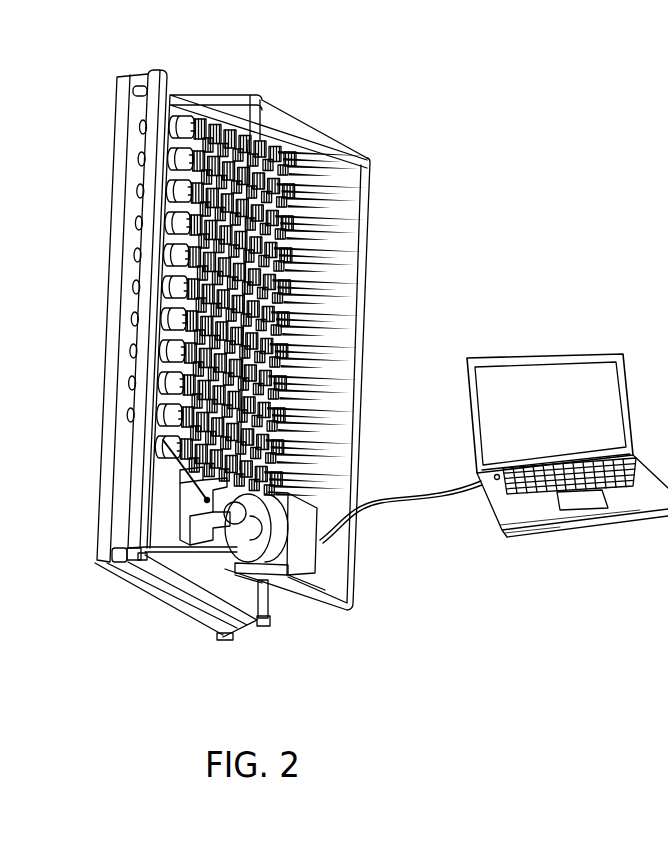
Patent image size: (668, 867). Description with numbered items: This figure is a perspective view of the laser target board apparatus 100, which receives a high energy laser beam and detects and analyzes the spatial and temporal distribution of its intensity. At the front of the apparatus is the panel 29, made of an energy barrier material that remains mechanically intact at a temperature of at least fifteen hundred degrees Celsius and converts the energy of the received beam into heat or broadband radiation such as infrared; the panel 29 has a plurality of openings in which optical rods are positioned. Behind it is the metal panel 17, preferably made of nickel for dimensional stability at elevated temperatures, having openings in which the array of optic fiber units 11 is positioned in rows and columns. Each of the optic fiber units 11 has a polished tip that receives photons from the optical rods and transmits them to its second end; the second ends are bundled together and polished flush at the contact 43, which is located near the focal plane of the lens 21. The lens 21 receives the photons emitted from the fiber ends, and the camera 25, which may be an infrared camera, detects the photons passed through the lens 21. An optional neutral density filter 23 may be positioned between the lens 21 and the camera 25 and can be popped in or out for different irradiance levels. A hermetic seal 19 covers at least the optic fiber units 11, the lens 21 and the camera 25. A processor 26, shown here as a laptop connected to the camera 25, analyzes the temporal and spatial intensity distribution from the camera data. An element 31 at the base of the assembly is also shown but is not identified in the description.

The laser target board apparatus 100 is at (363, 94).
The optic fiber units 11 is at (343, 250).
The metal panel 17 is at (157, 78).
The hermetic seal 19 is at (337, 569).
The lens 21 is at (215, 525).
The filter 23 is at (238, 518).
The camera 25 is at (305, 575).
The processor 26 is at (510, 528).
The panel 29 is at (100, 523).
The mounting block 31 is at (118, 553).
The contact 43 is at (207, 503).